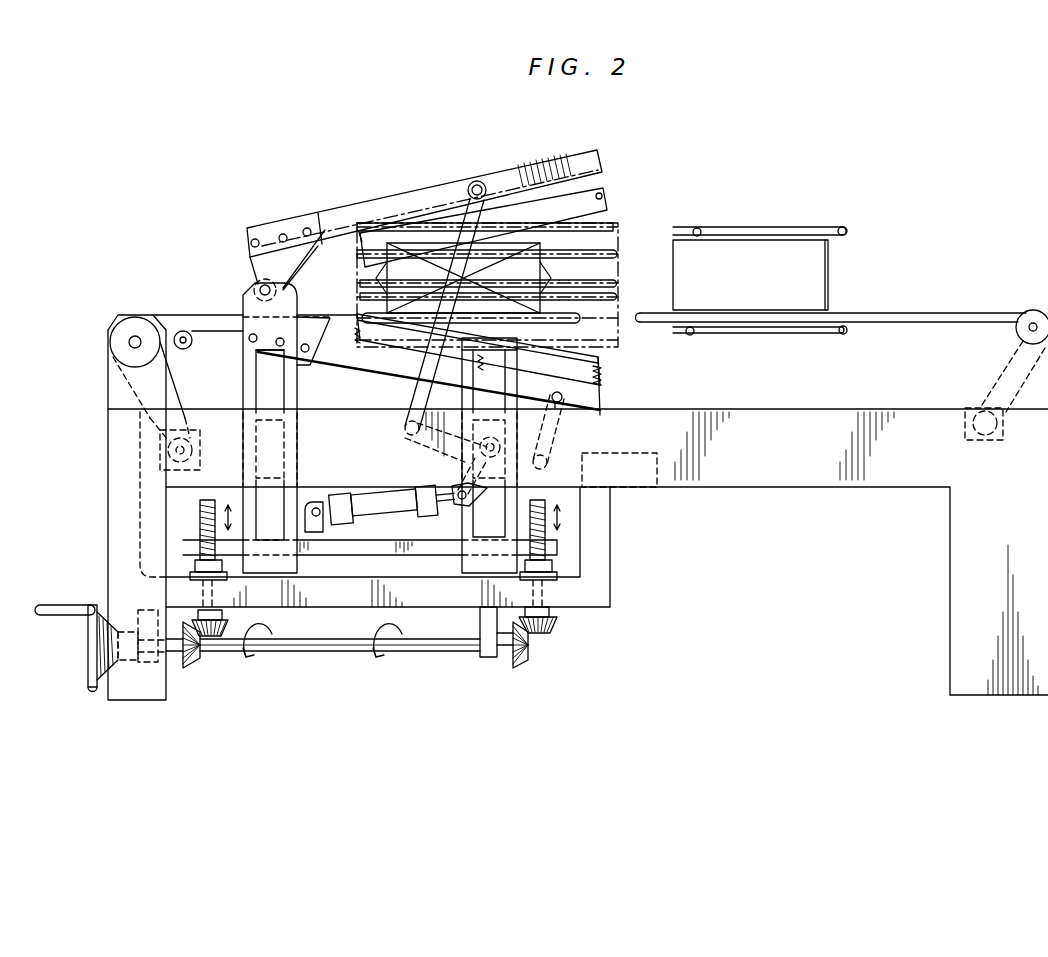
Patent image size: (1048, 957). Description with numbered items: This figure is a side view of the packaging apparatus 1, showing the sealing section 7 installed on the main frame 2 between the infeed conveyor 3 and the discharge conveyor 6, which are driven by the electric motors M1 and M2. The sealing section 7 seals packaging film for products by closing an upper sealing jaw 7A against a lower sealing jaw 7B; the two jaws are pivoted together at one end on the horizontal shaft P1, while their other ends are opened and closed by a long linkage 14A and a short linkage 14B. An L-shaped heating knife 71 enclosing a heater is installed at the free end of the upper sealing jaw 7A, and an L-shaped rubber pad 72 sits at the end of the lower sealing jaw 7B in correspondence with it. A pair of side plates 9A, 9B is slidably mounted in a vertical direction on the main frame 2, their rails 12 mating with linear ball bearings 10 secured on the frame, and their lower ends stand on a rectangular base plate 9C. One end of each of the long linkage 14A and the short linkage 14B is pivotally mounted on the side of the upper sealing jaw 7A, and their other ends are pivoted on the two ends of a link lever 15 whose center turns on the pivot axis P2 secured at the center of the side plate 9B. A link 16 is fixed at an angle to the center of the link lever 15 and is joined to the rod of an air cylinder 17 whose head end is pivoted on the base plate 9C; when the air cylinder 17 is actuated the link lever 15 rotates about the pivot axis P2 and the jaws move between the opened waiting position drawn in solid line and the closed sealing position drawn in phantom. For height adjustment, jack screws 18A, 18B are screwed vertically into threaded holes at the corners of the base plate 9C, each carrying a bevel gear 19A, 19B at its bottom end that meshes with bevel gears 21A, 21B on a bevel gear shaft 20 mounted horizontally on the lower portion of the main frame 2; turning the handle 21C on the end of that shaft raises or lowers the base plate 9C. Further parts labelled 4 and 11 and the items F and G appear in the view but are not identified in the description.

The packaging machine 1 is at (860, 175).
The main frame 2 is at (612, 584).
The infeed conveyor 3 is at (912, 318).
The conveyor chains 4 is at (838, 232).
The discharge conveyor 6 is at (215, 318).
The sealing section 7 is at (454, 199).
The upper sealing jaw 7A is at (512, 174).
The lower sealing jaw 7B is at (535, 364).
The L-shaped heating knife 71 is at (610, 198).
The L-shaped rubber pad 72 is at (604, 368).
The side plate 9A is at (243, 372).
The side plate 9B is at (463, 387).
The base plate 9C is at (400, 550).
The linear ball bearing 10 is at (297, 447).
The lever 11 is at (451, 475).
The rail 12 is at (290, 381).
The long linkage 14A is at (462, 228).
The short linkage 14B is at (595, 439).
The link lever 15 is at (406, 448).
The link 16 is at (489, 469).
The air cylinder 17 is at (372, 512).
The jack screw 18A is at (205, 532).
The jack screw 18B is at (548, 520).
The bevel gear 19A is at (228, 630).
The bevel gear 19B is at (545, 636).
The bevel gear shaft 20 is at (318, 652).
The bevel gear 21A is at (192, 668).
The bevel gear 21B is at (503, 668).
The handle 21C is at (82, 633).
The horizontal shaft P1 is at (260, 291).
The pivot axis P2 is at (577, 490).
The electric motor M1 is at (986, 441).
The electric motor M2 is at (165, 452).
The film sheet F is at (620, 290).
The article G is at (750, 275).